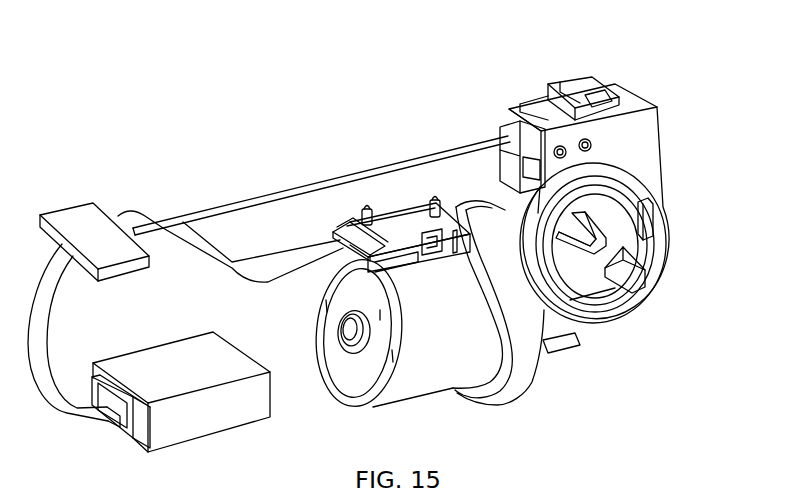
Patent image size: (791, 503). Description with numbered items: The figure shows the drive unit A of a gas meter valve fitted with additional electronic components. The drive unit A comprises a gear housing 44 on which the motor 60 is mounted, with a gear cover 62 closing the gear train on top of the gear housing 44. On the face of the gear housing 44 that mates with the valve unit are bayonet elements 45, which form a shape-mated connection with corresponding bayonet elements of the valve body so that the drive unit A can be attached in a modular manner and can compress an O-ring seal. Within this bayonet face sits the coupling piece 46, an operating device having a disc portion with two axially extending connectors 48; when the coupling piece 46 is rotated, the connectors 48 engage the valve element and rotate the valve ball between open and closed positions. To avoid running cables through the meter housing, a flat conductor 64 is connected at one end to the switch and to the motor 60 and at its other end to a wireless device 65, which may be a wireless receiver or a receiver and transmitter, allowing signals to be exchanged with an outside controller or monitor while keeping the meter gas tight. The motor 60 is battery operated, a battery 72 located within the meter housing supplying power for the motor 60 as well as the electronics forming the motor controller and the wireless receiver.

The gear housing 44 is at (637, 132).
The bayonet elements 45 is at (650, 223).
The coupling piece 46 is at (580, 273).
The connectors 48 is at (645, 205).
The motor 60 is at (453, 370).
The gear cover 62 is at (570, 80).
The flat conductor 64 is at (277, 262).
The wireless device 65 is at (73, 222).
The battery 72 is at (165, 362).
The drive unit A is at (358, 113).